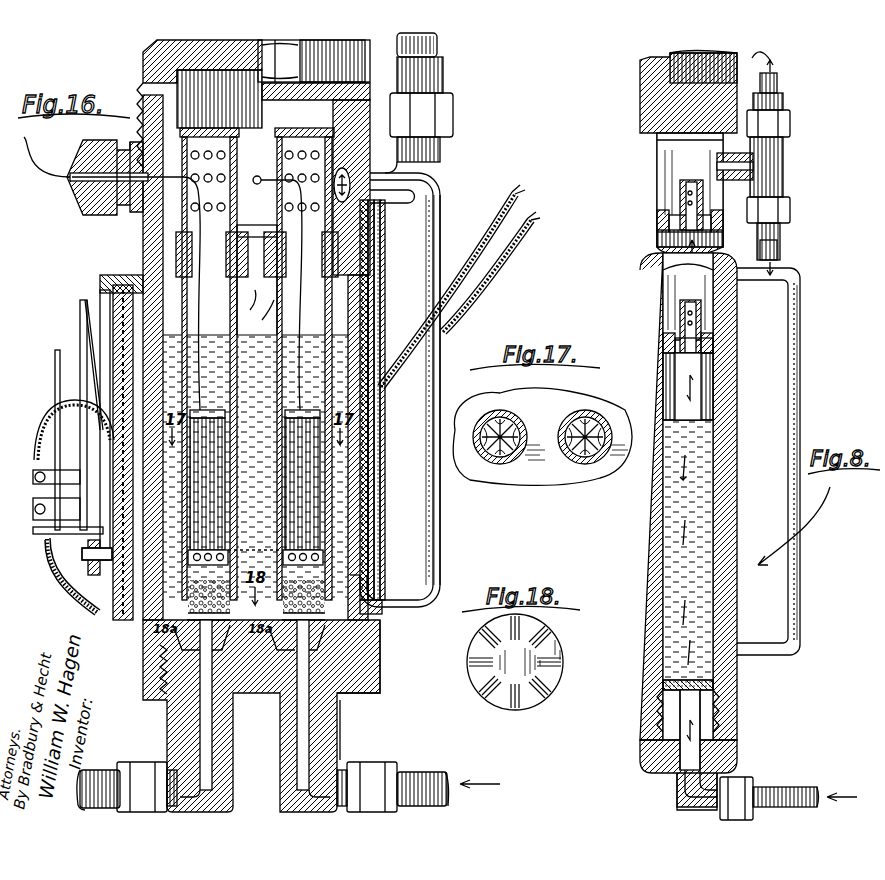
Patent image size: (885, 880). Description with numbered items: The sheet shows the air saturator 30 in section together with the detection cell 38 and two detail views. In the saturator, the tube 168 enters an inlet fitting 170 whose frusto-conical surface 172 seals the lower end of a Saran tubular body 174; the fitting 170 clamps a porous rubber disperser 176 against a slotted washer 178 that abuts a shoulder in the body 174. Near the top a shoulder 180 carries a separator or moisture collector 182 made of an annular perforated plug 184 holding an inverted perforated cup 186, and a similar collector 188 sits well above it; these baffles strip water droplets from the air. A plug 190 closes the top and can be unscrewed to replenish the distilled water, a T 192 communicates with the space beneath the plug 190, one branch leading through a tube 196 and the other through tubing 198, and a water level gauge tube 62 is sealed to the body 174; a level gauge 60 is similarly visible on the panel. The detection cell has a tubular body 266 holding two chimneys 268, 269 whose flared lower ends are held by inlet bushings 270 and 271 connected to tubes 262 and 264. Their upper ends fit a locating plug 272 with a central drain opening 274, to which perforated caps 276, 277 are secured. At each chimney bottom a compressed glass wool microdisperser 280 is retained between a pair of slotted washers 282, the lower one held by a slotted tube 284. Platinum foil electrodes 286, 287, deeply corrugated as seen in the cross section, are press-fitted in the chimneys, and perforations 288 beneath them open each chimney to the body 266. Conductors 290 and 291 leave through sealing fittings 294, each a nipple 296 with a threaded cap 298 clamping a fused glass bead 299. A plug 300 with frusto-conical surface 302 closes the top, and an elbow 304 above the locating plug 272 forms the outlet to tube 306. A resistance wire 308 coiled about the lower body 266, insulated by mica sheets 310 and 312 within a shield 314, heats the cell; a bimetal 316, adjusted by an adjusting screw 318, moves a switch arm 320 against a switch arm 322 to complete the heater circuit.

In FIG. 16, the plug 300 is at (150, 60).
In FIG. 16, the frusto-conical surface 302 is at (145, 90).
In FIG. 16, the locating plug 272 is at (355, 245).
In FIG. 16, the perforated cap 276 is at (218, 150).
In FIG. 16, the perforated cap 277 is at (306, 137).
In FIG. 16, the central drain opening 274 is at (240, 204).
In FIG. 16, the elbow 304 is at (442, 178).
In FIG. 16, the tube 306 is at (400, 52).
In FIG. 16, the high resistance wire 308 is at (370, 333).
In FIG. 16, the mica sheet 310 is at (372, 432).
In FIG. 16, the mica sheet 312 is at (377, 452).
In FIG. 16, the shield 314 is at (383, 470).
In FIG. 16, the cell 38 is at (440, 295).
In FIG. 16, the level gauge 60 is at (441, 356).
In FIG. 16, the glass bead 299 is at (70, 185).
In FIG. 16, the cap 298 is at (85, 210).
In FIG. 16, the sealing fitting 294 is at (110, 205).
In FIG. 16, the nipple 296 is at (133, 208).
In FIG. 16, the conductor 290 is at (205, 262).
In FIG. 16, the conductor 291 is at (298, 280).
In FIG. 16, the chimney 268 is at (240, 296).
In FIG. 16, the chimney 269 is at (258, 315).
In FIG. 16, the electrode 286 is at (215, 432).
In FIG. 17, the electrode 286 is at (498, 462).
In FIG. 16, the electrode 287 is at (297, 455).
In FIG. 17, the electrode 287 is at (588, 460).
In FIG. 16, the perforations 288 is at (335, 552).
In FIG. 16, the compressed glass wool microdisperser 280 is at (360, 575).
In FIG. 16, the slotted washer 282 is at (382, 607).
In FIG. 18, the slotted washer 282 is at (548, 648).
In FIG. 16, the tubular body 266 is at (360, 643).
In FIG. 16, the inlet bushing 270 is at (180, 660).
In FIG. 16, the tube 284 is at (200, 690).
In FIG. 16, the inlet bushing 271 is at (370, 676).
In FIG. 16, the tube 262 is at (85, 770).
In FIG. 16, the tube 264 is at (435, 772).
In FIG. 16, the bimetal 316 is at (120, 285).
In FIG. 16, the adjusting screw 318 is at (88, 545).
In FIG. 16, the switch arm 320 is at (100, 282).
In FIG. 16, the switch arm 322 is at (50, 390).
In FIG. 8, the plug 190 is at (660, 60).
In FIG. 8, the tube 196 is at (770, 58).
In FIG. 8, the T 192 is at (785, 168).
In FIG. 8, the tubing 198 is at (780, 252).
In FIG. 8, the collector 188 is at (660, 222).
In FIG. 8, the inverted perforated cup 186 is at (703, 235).
In FIG. 8, the separator or moisture collector 182 is at (665, 340).
In FIG. 8, the annular perforated plug 184 is at (712, 340).
In FIG. 8, the shoulder 180 is at (725, 360).
In FIG. 8, the water level gauge tube 62 is at (802, 355).
In FIG. 8, the saturator 30 is at (799, 516).
In FIG. 8, the tubular body 174 is at (645, 570).
In FIG. 8, the porous rubber disperser 176 is at (715, 685).
In FIG. 8, the slotted washer 178 is at (663, 690).
In FIG. 8, the frusto-conical surface 172 is at (735, 745).
In FIG. 8, the inlet fitting 170 is at (737, 760).
In FIG. 8, the tube 168 is at (790, 787).